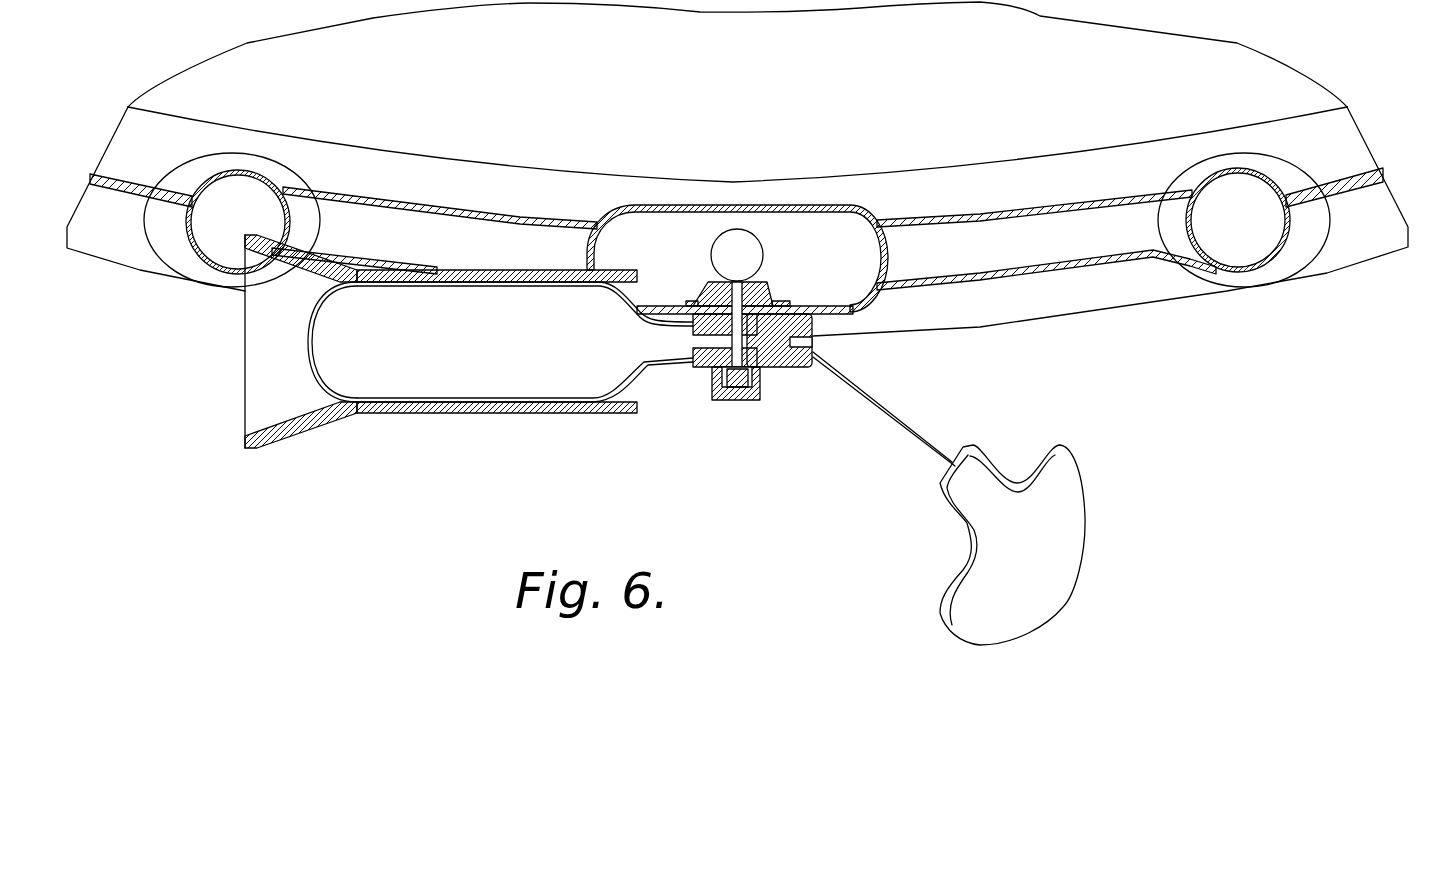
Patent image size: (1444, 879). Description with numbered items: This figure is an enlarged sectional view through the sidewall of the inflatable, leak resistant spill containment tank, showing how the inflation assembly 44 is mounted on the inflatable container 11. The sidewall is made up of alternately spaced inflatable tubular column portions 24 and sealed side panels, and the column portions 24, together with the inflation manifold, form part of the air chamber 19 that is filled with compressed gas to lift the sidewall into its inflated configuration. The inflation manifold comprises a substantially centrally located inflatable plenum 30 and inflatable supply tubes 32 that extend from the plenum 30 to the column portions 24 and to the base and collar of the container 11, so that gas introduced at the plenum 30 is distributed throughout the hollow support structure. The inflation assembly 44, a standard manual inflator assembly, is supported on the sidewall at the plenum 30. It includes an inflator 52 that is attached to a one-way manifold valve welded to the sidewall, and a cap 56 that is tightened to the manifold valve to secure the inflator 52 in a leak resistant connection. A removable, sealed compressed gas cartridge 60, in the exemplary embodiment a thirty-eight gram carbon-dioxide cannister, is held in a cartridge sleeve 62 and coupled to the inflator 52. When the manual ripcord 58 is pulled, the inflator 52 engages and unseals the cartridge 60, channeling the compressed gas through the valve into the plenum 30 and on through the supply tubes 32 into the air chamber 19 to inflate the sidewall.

The inflatable container 11 is at (1334, 276).
The air chamber 19 is at (233, 222).
The tubular column portions 24 is at (240, 170).
The inflatable plenum 30 is at (758, 205).
The inflatable supply tubes 32 is at (467, 207).
The inflation assembly 44 is at (772, 456).
The inflator 52 is at (787, 365).
The cap 56 is at (735, 400).
The manual ripcord 58 is at (1083, 507).
The compressed gas cartridge 60 is at (658, 364).
The cartridge sleeve 62 is at (287, 437).